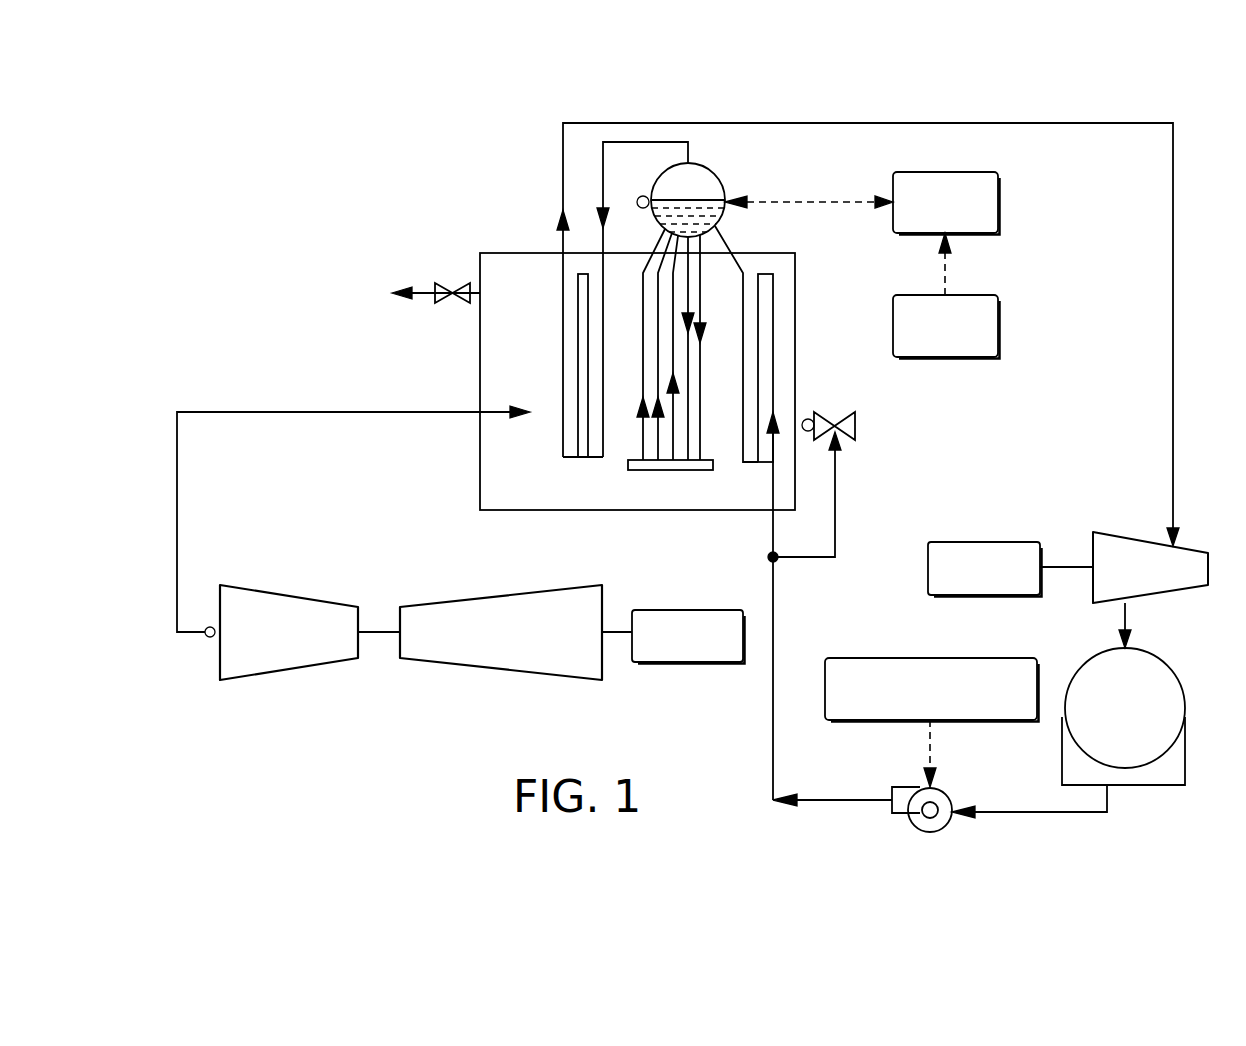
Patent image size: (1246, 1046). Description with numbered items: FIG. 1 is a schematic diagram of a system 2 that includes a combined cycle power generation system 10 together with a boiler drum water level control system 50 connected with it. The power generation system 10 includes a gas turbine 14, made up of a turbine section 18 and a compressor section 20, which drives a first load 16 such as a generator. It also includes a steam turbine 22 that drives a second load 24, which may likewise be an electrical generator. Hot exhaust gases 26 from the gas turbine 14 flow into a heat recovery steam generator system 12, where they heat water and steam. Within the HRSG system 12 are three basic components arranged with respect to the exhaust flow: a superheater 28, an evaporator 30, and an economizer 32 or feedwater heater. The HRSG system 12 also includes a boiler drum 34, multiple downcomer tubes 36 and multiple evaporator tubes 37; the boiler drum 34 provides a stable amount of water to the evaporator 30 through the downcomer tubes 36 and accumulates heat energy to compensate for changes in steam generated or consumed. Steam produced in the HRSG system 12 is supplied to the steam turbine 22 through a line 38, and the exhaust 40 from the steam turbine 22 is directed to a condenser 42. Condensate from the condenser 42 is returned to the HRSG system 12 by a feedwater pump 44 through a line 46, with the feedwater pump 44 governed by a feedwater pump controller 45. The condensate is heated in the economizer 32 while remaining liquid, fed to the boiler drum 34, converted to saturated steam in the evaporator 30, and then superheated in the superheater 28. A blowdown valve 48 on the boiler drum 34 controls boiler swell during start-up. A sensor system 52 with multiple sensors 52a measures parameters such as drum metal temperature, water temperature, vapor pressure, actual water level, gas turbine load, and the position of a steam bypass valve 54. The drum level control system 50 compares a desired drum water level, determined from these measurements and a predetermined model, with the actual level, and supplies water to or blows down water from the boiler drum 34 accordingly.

The system 2 is at (320, 118).
The combined cycle power generation system 10 is at (1060, 90).
The heat recovery steam generator system 12 is at (607, 538).
The gas turbine 14 is at (426, 652).
The first load 16 is at (663, 610).
The turbine section 18 is at (295, 595).
The compressor section 20 is at (453, 597).
The steam turbine 22 is at (1117, 532).
The second load 24 is at (963, 542).
The hot exhaust gases 26 is at (288, 410).
The superheater 28 is at (583, 458).
The evaporator 30 is at (670, 470).
The economizer 32 is at (753, 462).
The boiler drum 34 is at (720, 178).
The downcomer tubes 36 is at (702, 442).
The evaporator tubes 37 is at (642, 442).
The line 38 is at (827, 123).
The exhaust 40 is at (1130, 608).
The condenser 42 is at (1178, 672).
The feedwater pump 44 is at (945, 828).
The feedwater pump controller 45 is at (950, 722).
The line 46 is at (773, 590).
The blowdown valve 48 is at (460, 285).
The boiler drum water level control system 50 is at (998, 212).
The sensor system 52 is at (998, 318).
The sensors 52a is at (637, 207).
The steam bypass valve 54 is at (850, 412).